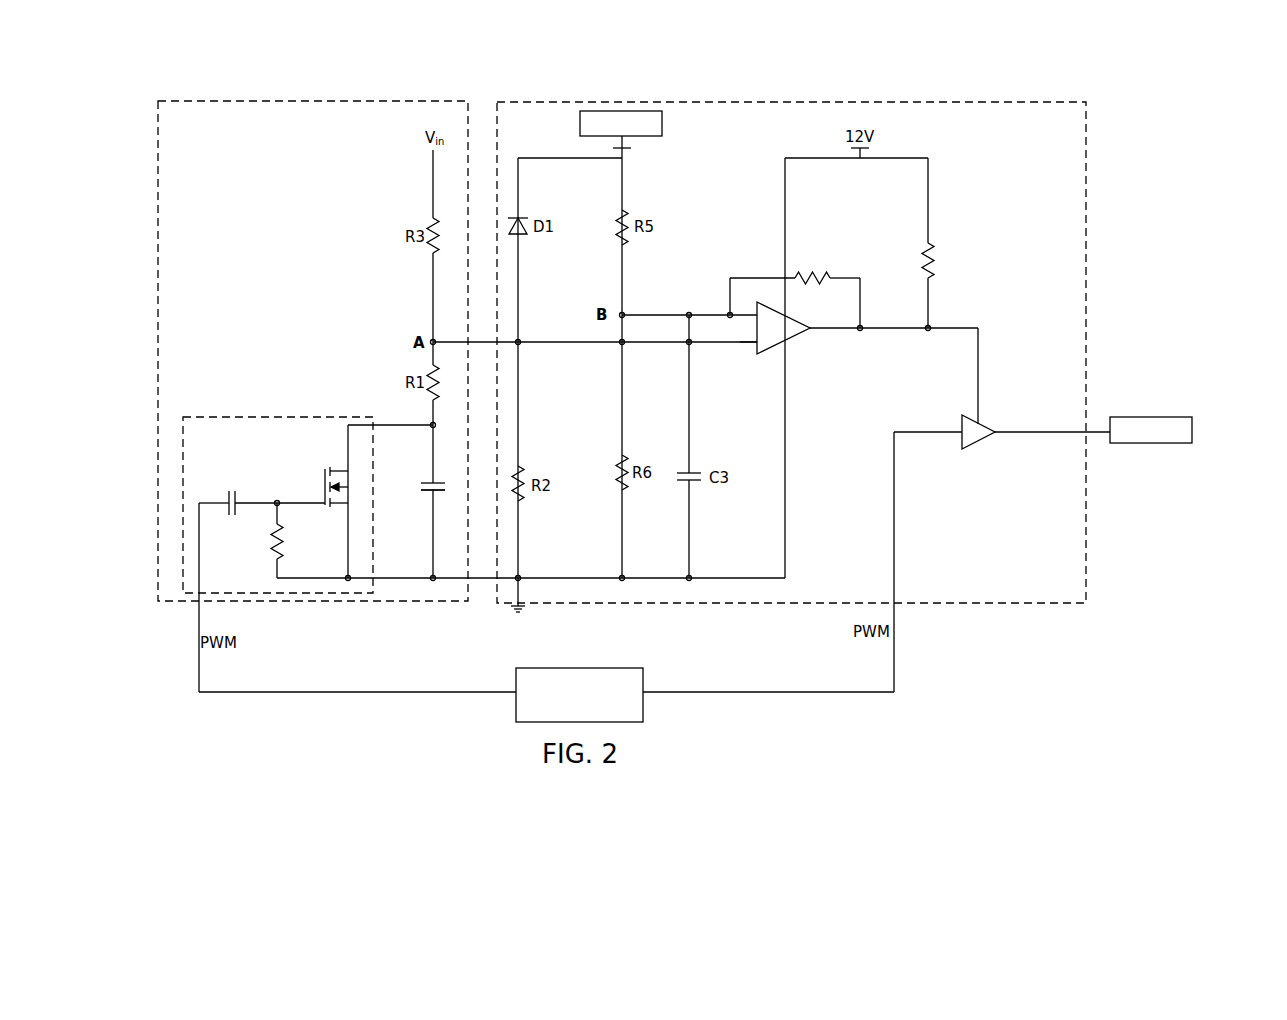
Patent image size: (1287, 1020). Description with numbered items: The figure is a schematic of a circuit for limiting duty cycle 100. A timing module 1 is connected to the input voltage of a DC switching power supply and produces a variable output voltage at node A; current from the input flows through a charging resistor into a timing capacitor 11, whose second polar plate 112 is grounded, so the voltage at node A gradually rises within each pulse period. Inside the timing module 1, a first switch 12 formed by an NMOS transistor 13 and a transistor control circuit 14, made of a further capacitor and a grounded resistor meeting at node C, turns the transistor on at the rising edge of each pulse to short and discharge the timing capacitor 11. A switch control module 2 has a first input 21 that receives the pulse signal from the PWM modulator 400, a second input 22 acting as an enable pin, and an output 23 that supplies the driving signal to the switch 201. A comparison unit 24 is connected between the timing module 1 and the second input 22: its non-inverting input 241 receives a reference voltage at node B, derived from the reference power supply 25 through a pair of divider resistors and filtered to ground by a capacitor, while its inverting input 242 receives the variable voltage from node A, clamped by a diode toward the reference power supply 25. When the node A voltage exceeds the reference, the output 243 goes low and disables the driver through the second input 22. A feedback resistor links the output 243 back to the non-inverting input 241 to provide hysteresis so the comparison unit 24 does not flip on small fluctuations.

The timing module 1 is at (265, 101).
The switch control module 2 is at (978, 101).
The circuit for limiting duty cycle 100 is at (836, 70).
The capacitor C1 11 is at (439, 482).
The second polar plate 112 is at (426, 493).
The first switch 12 is at (270, 417).
The NMOS transistor 13 is at (327, 470).
The transistor control circuit 14 is at (255, 560).
The first input 21 is at (955, 433).
The second input 22 is at (979, 416).
The output 23 is at (998, 434).
The comparison unit 24 is at (771, 255).
The non-inverting input 241 is at (752, 312).
The inverting input 242 is at (756, 343).
The output 243 is at (814, 331).
The reference power supply 25 is at (640, 111).
The switch 201 is at (1178, 417).
The PWM modulator 400 is at (616, 668).